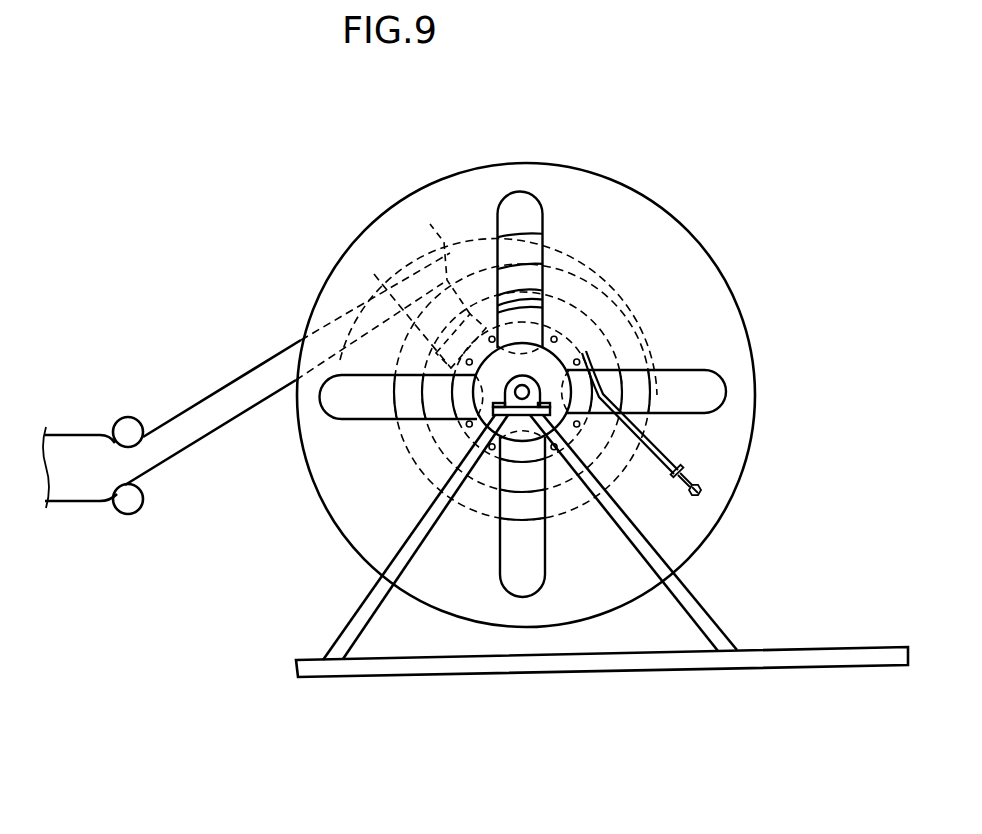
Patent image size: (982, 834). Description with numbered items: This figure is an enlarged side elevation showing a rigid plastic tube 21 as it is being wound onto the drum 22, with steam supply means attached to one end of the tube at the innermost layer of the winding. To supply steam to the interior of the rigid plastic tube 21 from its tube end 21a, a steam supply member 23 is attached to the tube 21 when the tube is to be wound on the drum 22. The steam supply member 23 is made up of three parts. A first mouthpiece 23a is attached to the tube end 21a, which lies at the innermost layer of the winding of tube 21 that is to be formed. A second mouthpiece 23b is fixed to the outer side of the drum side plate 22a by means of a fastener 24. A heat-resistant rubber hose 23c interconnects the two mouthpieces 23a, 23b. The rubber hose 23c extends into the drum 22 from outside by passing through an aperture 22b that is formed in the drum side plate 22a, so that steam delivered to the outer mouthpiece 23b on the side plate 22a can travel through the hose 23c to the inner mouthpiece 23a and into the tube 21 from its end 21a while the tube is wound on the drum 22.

The rigid plastic tube 21 is at (180, 414).
The tube end 21a is at (373, 312).
The drum 22 is at (612, 178).
The drum side plate 22a is at (694, 266).
The aperture 22b is at (670, 380).
The steam supply member 23 is at (633, 442).
The mouthpiece 23a is at (453, 280).
The mouthpiece 23b is at (706, 485).
The heat-resistant rubber hose 23c is at (670, 460).
The fastener 24 is at (683, 466).